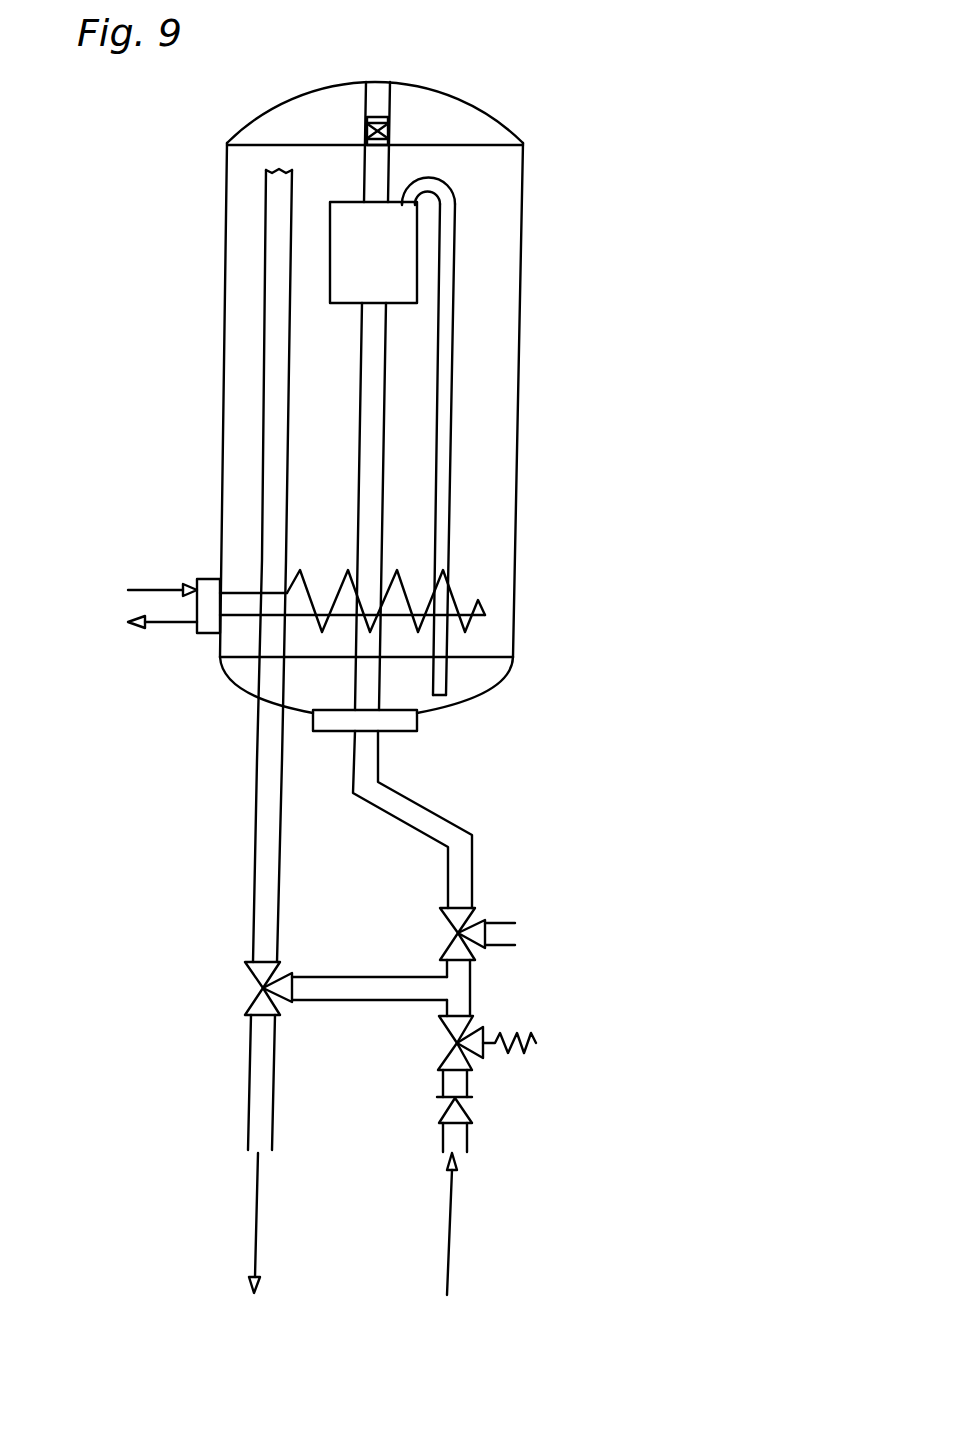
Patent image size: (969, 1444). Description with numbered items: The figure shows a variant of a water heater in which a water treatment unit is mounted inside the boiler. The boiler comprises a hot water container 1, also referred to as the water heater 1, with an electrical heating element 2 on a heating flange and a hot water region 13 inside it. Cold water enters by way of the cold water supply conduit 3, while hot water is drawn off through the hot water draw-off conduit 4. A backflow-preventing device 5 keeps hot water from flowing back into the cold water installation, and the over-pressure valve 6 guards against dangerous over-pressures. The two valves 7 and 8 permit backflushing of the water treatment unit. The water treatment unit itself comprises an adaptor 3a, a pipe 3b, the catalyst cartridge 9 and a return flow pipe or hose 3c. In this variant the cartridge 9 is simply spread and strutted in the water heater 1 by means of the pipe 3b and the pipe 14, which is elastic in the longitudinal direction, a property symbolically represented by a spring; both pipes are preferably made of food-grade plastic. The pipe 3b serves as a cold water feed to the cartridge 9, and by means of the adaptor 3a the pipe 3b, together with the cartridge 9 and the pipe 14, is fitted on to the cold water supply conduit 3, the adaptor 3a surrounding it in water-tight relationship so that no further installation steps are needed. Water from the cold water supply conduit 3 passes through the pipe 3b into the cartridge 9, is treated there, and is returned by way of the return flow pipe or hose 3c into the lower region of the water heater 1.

The hot water container 1 is at (220, 445).
The electrical heating element 2 is at (208, 580).
The cold water supply conduit 3 is at (452, 1203).
The adaptor 3a is at (395, 717).
The pipe 3b is at (372, 558).
The return flow pipe or hose 3c is at (445, 398).
The hot water draw-off conduit 4 is at (266, 753).
The backflow-preventing device 5 is at (453, 1113).
The over-pressure valve 6 is at (531, 1033).
The valve 7 is at (498, 932).
The valve 8 is at (263, 988).
The catalyst cartridge 9 is at (390, 270).
The hot water region 13 is at (317, 372).
The pipe 14 is at (393, 127).